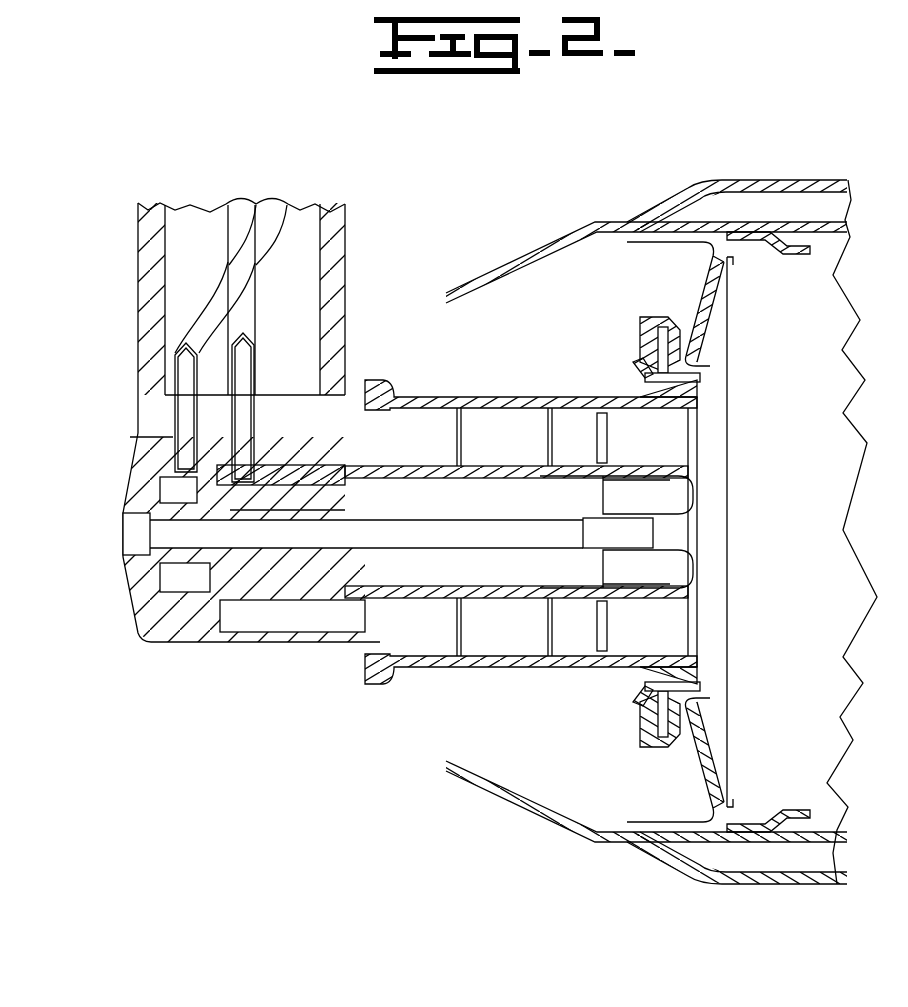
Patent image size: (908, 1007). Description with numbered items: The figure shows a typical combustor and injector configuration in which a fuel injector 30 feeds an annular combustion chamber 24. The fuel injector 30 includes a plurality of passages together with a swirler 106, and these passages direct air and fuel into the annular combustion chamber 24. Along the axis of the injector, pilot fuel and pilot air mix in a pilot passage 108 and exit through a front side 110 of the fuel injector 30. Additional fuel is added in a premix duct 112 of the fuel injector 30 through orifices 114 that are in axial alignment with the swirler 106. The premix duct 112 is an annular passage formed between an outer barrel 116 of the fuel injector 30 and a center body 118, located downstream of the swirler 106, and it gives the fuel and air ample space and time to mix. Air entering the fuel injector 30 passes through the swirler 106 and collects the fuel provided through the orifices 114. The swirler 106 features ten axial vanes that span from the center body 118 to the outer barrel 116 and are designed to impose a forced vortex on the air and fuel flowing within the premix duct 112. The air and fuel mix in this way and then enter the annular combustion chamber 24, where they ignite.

The fuel injector 30 is at (122, 198).
The annular combustion chamber 24 is at (830, 567).
The swirler 106 is at (520, 447).
The pilot passage 108 is at (437, 545).
The front side 110 is at (700, 430).
The premix duct 112 is at (673, 420).
The orifices 114 is at (600, 413).
The outer barrel 116 is at (583, 667).
The center body 118 is at (700, 483).